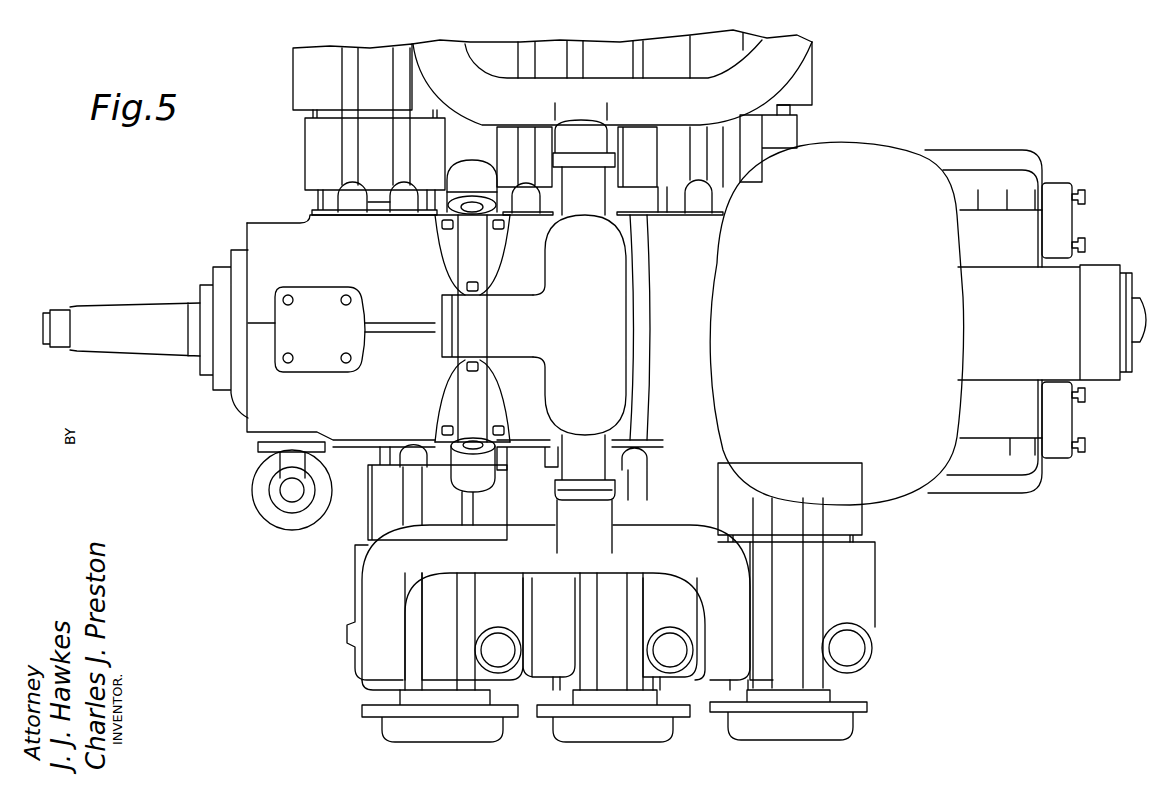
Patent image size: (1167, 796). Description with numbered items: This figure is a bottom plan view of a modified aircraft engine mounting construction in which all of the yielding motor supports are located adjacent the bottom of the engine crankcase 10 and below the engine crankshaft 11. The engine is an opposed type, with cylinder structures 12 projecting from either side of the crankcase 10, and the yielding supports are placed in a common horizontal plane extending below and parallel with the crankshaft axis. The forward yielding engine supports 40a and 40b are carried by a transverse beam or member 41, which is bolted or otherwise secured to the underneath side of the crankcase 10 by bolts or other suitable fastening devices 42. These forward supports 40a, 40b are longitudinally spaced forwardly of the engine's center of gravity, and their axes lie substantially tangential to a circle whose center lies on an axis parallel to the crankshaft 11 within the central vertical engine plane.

The crankcase 10 is at (265, 403).
The crankshaft 11 is at (100, 340).
The cylinder structures 12 is at (305, 63).
The forward yielding engine support 40a is at (468, 485).
The forward yielding engine support 40b is at (490, 150).
The transverse beam 41 is at (472, 392).
The bolts 42 is at (442, 227).